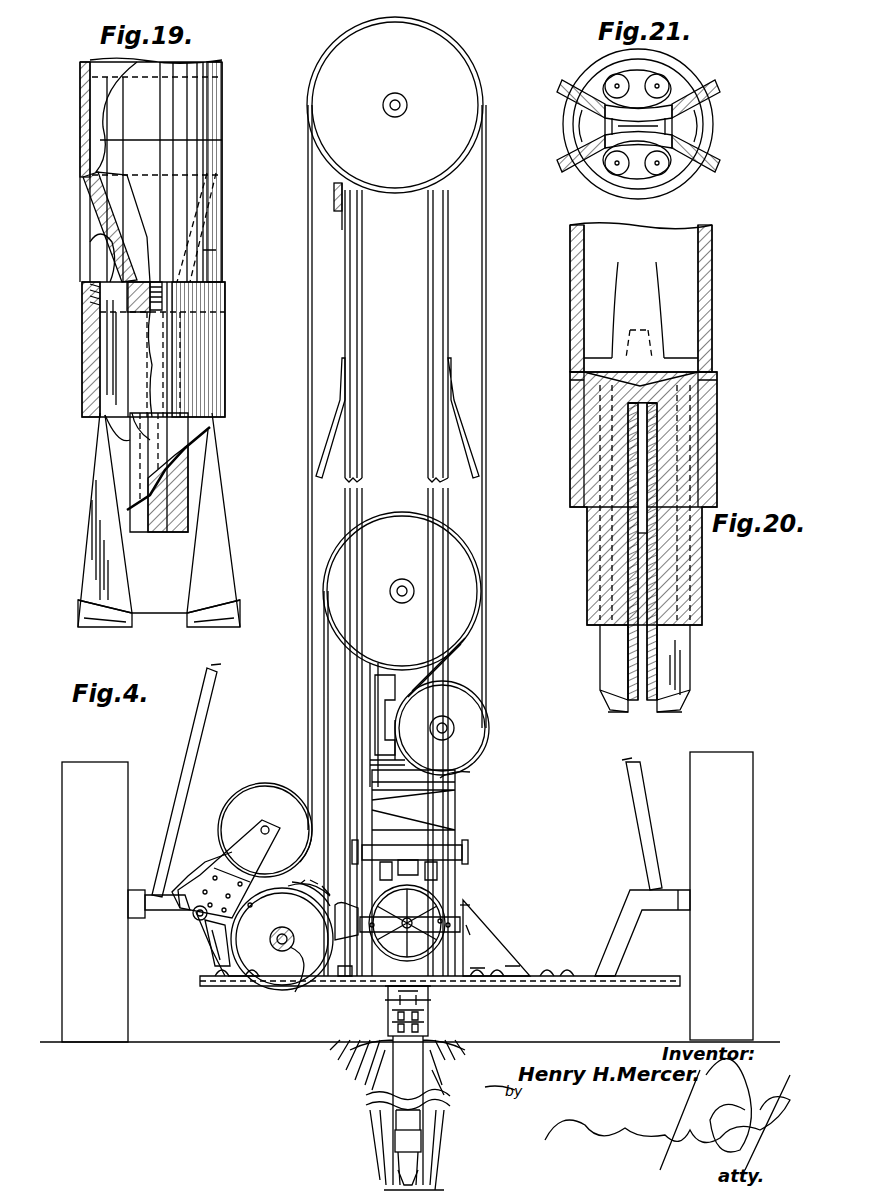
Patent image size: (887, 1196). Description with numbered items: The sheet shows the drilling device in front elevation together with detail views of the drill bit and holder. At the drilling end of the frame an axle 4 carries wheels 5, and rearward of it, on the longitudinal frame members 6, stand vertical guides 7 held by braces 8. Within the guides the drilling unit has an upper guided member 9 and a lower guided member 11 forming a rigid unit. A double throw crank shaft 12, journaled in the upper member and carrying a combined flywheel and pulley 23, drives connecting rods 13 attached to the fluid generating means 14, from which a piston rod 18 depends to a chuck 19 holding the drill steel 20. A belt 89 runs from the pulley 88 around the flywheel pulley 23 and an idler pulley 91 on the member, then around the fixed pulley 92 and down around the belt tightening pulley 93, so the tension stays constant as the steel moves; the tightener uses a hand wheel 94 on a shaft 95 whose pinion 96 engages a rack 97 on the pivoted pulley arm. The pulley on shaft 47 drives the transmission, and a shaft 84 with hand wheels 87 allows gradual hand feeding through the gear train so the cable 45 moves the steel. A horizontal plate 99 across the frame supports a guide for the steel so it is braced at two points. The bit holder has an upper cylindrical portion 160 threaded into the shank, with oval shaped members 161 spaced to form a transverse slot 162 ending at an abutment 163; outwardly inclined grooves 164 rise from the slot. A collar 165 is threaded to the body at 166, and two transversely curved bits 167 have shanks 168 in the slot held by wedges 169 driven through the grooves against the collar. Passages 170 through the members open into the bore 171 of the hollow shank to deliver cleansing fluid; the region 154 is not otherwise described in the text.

In FIG. 4, the axle 4 is at (168, 907).
In FIG. 4, the wheels 5 is at (110, 798).
In FIG. 4, the longitudinal frame members 6 is at (350, 907).
In FIG. 4, the vertical guides 7 is at (435, 797).
In FIG. 4, the braces 8 is at (340, 450).
In FIG. 4, the upper guided member 9 is at (372, 690).
In FIG. 4, the lower guided member 11 is at (430, 907).
In FIG. 4, the double throw crank shaft 12 is at (404, 598).
In FIG. 4, the connecting rods 13 is at (405, 822).
In FIG. 4, the fluid generating means 14 is at (475, 774).
In FIG. 4, the piston rod 18 is at (410, 880).
In FIG. 4, the chuck 19 is at (430, 1012).
In FIG. 19, the drill steel 20 is at (80, 74).
In FIG. 20, the drill steel 20 is at (712, 230).
In FIG. 4, the drill steel 20 is at (405, 1045).
In FIG. 4, the combined flywheel and pulley 23 is at (460, 577).
In FIG. 4, the cable 45 is at (355, 347).
In FIG. 4, the shaft 47 is at (293, 999).
In FIG. 4, the shaft 84 is at (290, 940).
In FIG. 4, the hand wheels 87 is at (300, 899).
In FIG. 4, the pulley 88 is at (278, 969).
In FIG. 4, the belt 89 is at (486, 277).
In FIG. 4, the idler pulley 91 is at (472, 720).
In FIG. 4, the fixed pulley 92 is at (450, 74).
In FIG. 4, the belt tightening pulley 93 is at (266, 790).
In FIG. 4, the hand wheel 94 is at (185, 880).
In FIG. 4, the shaft 95 is at (212, 942).
In FIG. 4, the pinion 96 is at (185, 914).
In FIG. 4, the rack 97 is at (215, 857).
In FIG. 4, the horizontal plate 99 is at (625, 986).
In FIG. 19, the curved wall 154 is at (92, 212).
In FIG. 19, the upper cylindrical portion 160 is at (213, 205).
In FIG. 20, the upper cylindrical portion 160 is at (712, 260).
In FIG. 4, the upper cylindrical portion 160 is at (400, 1122).
In FIG. 19, the oval shaped members 161 is at (205, 425).
In FIG. 21, the oval shaped members 161 is at (615, 78).
In FIG. 20, the oval shaped members 161 is at (587, 582).
In FIG. 4, the oval shaped members 161 is at (405, 1162).
In FIG. 21, the transverse slot 162 is at (600, 152).
In FIG. 20, the transverse slot 162 is at (650, 422).
In FIG. 19, the abutment 163 is at (128, 298).
In FIG. 20, the abutment 163 is at (660, 382).
In FIG. 19, the outwardly inclined grooves 164 is at (210, 218).
In FIG. 19, the collar 165 is at (208, 346).
In FIG. 21, the collar 165 is at (700, 72).
In FIG. 20, the collar 165 is at (570, 447).
In FIG. 4, the collar 165 is at (405, 1144).
In FIG. 19, the screw thread 166 is at (84, 290).
In FIG. 20, the screw thread 166 is at (568, 384).
In FIG. 19, the transversely curved bits 167 is at (205, 562).
In FIG. 21, the transversely curved bits 167 is at (708, 94).
In FIG. 20, the transversely curved bits 167 is at (600, 657).
In FIG. 4, the transversely curved bits 167 is at (400, 1180).
In FIG. 19, the shanks 168 is at (115, 322).
In FIG. 20, the shanks 168 is at (660, 407).
In FIG. 19, the wedges 169 is at (203, 248).
In FIG. 21, the wedges 169 is at (592, 127).
In FIG. 20, the wedges 169 is at (655, 457).
In FIG. 19, the passages 170 is at (180, 490).
In FIG. 21, the passages 170 is at (655, 84).
In FIG. 20, the passages 170 is at (590, 554).
In FIG. 19, the bore 171 is at (120, 195).
In FIG. 20, the bore 171 is at (672, 300).